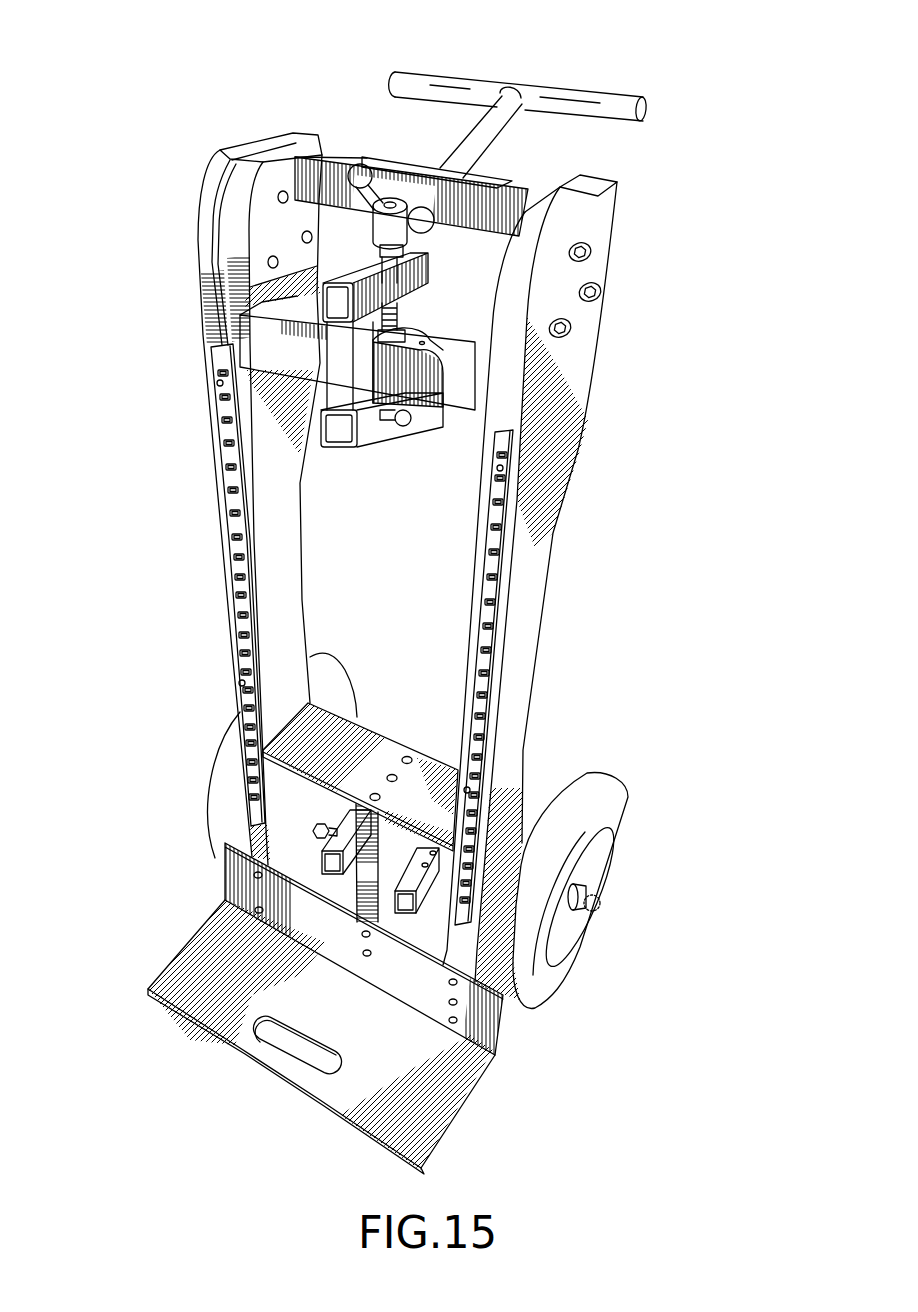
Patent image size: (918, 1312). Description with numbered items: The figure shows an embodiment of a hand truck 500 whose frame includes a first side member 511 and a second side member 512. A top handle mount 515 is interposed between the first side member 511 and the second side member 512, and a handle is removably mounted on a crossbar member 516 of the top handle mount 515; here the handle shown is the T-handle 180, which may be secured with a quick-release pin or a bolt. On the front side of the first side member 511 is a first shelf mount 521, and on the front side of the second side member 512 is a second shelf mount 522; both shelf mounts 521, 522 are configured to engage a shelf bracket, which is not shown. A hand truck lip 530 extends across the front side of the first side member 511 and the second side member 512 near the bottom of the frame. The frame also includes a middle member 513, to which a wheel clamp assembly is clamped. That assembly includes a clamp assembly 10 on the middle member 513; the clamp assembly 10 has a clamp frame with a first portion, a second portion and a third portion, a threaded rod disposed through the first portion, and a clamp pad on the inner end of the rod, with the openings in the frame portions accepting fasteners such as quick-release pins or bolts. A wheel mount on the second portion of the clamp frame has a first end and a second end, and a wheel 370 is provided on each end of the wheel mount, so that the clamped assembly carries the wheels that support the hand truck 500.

The hand truck 500 is at (148, 90).
The T-handle 180 is at (607, 97).
The crossbar member 516 is at (331, 157).
The top handle mount 515 is at (260, 166).
The first side member 511 is at (205, 200).
The second side member 512 is at (617, 215).
The first shelf mount 521 is at (207, 365).
The second shelf mount 522 is at (513, 440).
The middle member 513 is at (380, 865).
The clamp assembly 10 is at (316, 845).
The wheel 370 is at (616, 785).
The hand truck lip 530 is at (478, 1093).